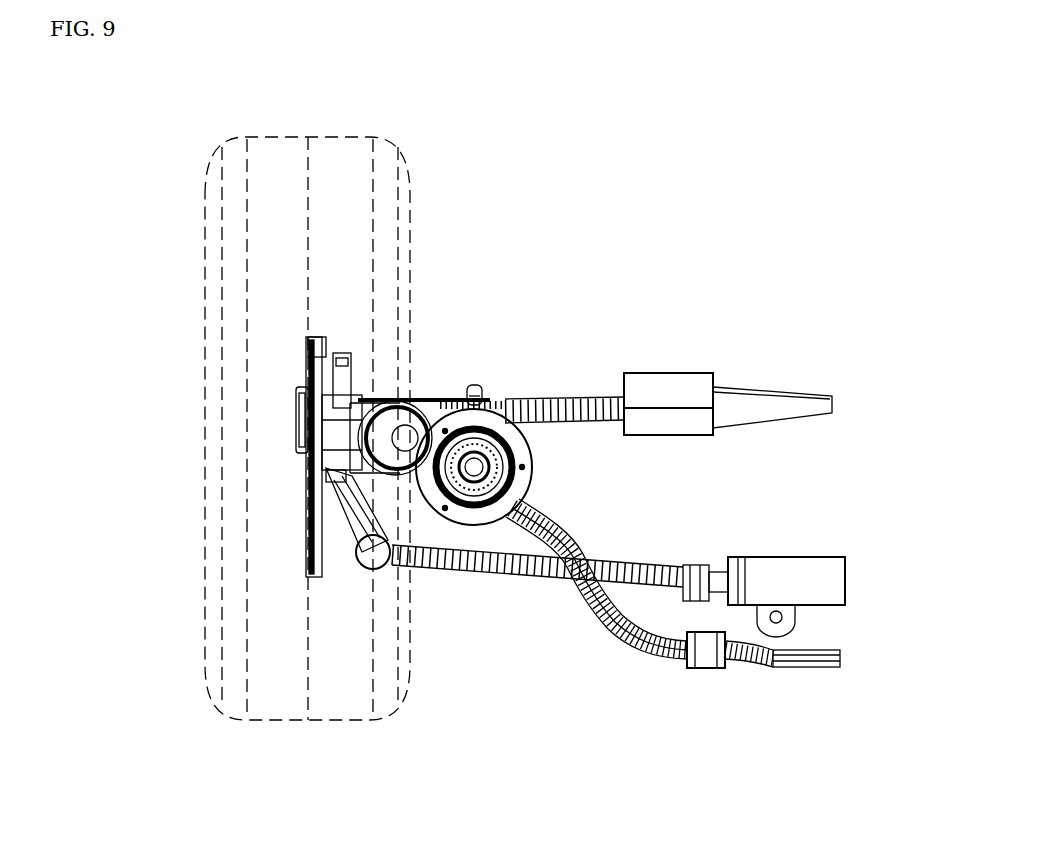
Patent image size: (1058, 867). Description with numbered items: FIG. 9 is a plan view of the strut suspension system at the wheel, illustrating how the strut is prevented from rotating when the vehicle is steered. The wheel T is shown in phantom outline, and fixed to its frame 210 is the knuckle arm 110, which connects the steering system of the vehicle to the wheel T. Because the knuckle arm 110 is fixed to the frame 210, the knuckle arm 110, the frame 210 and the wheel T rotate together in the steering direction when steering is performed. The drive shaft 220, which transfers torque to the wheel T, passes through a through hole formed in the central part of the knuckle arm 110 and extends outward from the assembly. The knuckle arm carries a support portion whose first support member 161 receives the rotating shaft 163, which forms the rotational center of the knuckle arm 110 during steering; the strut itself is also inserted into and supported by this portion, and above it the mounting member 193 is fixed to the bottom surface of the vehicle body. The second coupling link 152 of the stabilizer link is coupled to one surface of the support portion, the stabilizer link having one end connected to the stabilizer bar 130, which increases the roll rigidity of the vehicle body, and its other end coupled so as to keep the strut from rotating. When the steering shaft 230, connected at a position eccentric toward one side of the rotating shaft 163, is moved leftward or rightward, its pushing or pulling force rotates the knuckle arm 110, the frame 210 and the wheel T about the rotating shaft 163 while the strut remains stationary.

The wheel T is at (205, 268).
The knuckle arm 110 is at (300, 417).
The frame 210 is at (312, 523).
The first support member 161 is at (370, 398).
The rotating shaft 163 is at (410, 398).
The second coupling link 152 is at (474, 385).
The drive shaft 220 is at (568, 404).
The mounting member 193 is at (527, 457).
The steering shaft 230 is at (508, 568).
The stabilizer bar 130 is at (617, 627).